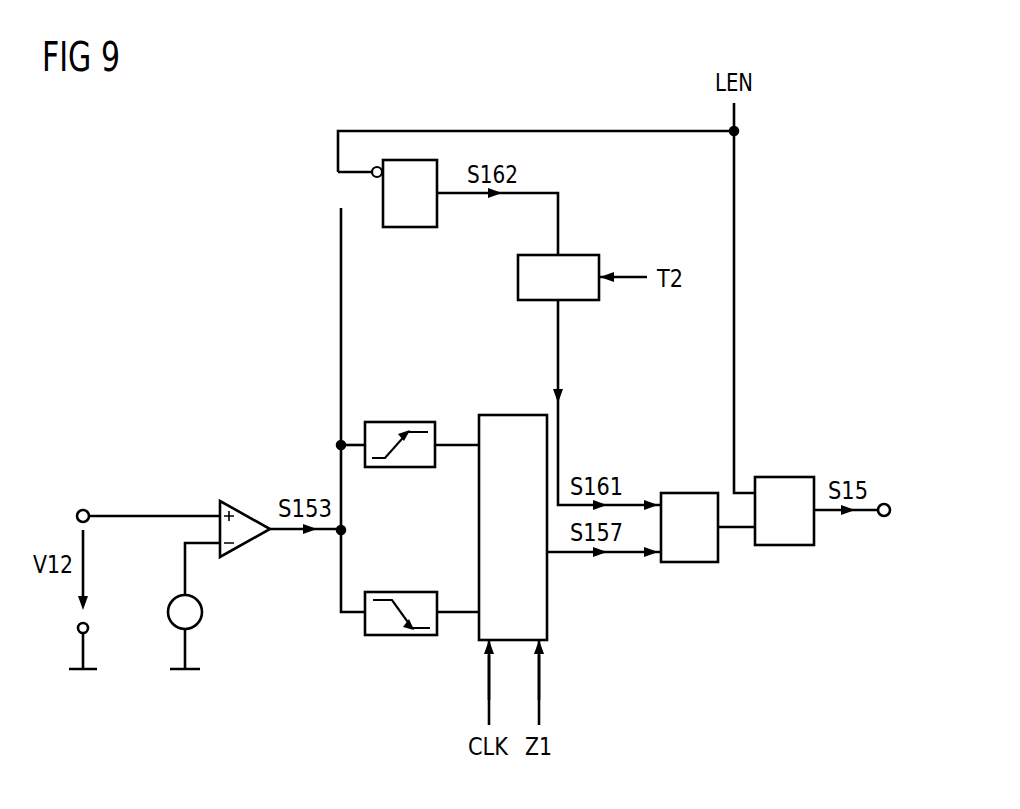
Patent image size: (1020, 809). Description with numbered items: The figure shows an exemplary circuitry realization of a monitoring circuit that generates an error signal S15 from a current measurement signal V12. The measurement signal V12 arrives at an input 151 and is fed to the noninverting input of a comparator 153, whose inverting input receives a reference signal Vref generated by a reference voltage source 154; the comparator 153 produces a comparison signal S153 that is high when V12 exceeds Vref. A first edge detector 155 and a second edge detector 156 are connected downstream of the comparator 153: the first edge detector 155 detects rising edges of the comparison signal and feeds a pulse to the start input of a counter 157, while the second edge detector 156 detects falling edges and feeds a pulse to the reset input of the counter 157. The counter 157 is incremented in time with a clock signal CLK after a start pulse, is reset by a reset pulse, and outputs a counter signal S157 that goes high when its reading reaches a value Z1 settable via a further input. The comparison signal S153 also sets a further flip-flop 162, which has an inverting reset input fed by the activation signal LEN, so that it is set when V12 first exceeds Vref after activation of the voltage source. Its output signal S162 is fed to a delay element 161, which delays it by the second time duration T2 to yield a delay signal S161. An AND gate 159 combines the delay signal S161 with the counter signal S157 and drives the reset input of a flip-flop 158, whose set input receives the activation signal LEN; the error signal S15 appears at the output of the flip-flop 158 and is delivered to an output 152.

The input 151 is at (86, 506).
The output 152 is at (886, 502).
The comparator 153 is at (258, 546).
The reference voltage source 154 is at (203, 612).
The first edge detector 155 is at (393, 420).
The second edge detector 156 is at (393, 590).
The counter 157 is at (512, 415).
The flip-flop 158 is at (783, 477).
The AND gate 159 is at (690, 563).
The delay element 161 is at (518, 278).
The further flip-flop 162 is at (405, 228).